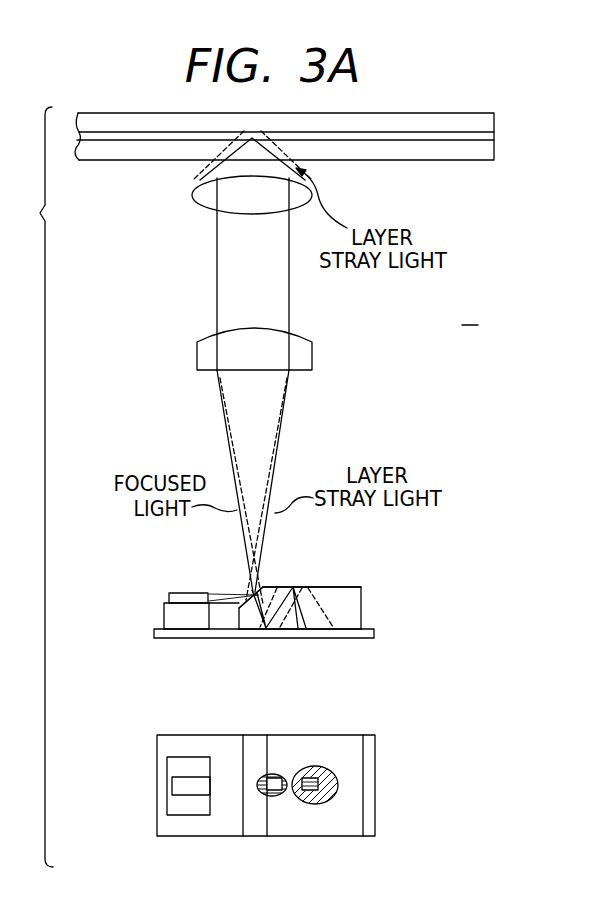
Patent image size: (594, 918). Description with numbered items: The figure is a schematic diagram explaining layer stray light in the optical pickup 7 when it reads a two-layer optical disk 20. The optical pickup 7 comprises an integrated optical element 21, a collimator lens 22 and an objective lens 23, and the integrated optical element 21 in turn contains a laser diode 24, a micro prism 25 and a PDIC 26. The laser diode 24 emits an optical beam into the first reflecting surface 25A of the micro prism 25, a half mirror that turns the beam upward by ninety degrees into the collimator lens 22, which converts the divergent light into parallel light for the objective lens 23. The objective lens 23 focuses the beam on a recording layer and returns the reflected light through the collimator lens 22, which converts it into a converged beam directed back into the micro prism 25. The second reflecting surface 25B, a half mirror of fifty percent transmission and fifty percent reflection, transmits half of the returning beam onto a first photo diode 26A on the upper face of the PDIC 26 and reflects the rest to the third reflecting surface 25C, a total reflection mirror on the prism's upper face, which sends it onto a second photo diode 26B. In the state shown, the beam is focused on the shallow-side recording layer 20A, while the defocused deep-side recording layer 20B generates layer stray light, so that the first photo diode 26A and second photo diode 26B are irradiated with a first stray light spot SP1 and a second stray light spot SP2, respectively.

The optical pickup 7 is at (470, 314).
The optical disk 20 is at (307, 164).
The shallow-side recording layer 20A is at (423, 141).
The deep-side recording layer 20B is at (468, 133).
The integrated optical element 21 is at (407, 563).
The collimator lens 22 is at (197, 358).
The objective lens 23 is at (203, 207).
The laser diode 24 is at (177, 592).
The micro prism 25 is at (310, 685).
The first reflecting surface 25A is at (247, 597).
The second reflecting surface 25B is at (250, 639).
The third reflecting surface 25C is at (322, 585).
The PDIC 26 is at (187, 640).
The first photo diode 26A is at (275, 777).
The second photo diode 26B is at (317, 770).
The first stray light spot SP1 is at (279, 783).
The second stray light spot SP2 is at (325, 781).